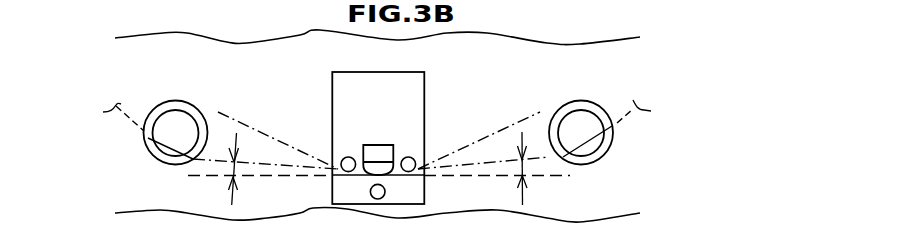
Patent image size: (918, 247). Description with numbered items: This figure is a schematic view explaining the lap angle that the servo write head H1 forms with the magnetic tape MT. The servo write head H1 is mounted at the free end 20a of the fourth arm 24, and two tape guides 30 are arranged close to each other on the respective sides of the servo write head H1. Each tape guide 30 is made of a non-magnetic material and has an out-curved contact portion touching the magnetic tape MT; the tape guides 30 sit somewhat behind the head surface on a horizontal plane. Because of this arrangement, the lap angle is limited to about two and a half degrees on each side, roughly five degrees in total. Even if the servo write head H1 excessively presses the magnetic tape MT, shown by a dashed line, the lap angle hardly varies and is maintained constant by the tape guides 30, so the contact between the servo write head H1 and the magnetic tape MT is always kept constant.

The tape guide 30 is at (520, 93).
The fourth arm 24 is at (425, 93).
The free end 20a is at (431, 181).
The servo write head H1 is at (358, 150).
The magnetic tape MT is at (652, 112).